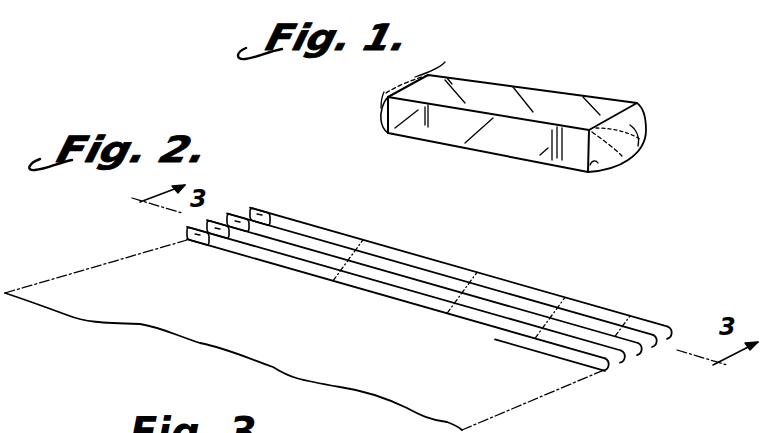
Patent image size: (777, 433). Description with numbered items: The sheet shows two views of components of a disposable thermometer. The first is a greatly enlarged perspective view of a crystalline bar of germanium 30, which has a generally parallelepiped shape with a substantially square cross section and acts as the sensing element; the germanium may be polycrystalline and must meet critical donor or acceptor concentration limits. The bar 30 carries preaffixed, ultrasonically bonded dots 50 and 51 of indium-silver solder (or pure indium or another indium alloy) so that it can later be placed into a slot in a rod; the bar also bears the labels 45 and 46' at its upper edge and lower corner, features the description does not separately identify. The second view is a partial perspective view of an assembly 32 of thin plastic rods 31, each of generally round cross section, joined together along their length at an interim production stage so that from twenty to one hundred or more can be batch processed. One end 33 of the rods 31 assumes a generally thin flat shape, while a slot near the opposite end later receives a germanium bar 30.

In FIG. 1, the crystalline bar of germanium 30 is at (561, 99).
In FIG. 1, the rounded top edge 45 is at (420, 78).
In FIG. 1, the dot of In-Ag solder 50 is at (385, 93).
In FIG. 1, the dot of In-Ag solder 51 is at (628, 138).
In FIG. 1, the bottom corner 46' is at (607, 185).
In FIG. 2, the thin plastic rods 31 is at (543, 322).
In FIG. 2, the end of the rods 33 is at (243, 214).
In FIG. 2, the assembly 32 is at (547, 372).